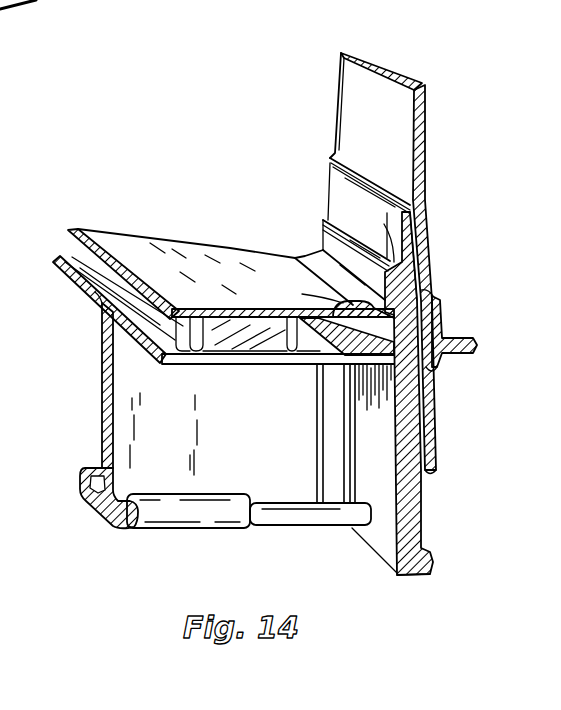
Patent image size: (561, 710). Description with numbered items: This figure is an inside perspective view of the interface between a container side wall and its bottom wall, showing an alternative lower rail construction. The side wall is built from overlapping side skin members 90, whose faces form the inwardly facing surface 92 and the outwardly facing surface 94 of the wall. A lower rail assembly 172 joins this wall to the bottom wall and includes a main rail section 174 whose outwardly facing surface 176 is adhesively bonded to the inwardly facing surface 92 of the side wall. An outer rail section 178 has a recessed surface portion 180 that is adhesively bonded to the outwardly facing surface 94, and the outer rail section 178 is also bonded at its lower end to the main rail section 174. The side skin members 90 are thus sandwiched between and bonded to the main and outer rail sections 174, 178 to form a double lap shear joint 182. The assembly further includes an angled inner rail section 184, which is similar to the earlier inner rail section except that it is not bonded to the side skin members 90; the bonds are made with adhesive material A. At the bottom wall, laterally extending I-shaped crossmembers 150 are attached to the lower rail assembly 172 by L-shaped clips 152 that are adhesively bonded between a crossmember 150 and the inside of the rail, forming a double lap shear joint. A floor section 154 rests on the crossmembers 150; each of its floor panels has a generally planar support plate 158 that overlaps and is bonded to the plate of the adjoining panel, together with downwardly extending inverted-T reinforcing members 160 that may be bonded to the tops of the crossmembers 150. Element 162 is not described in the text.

The side skin member 90 is at (381, 65).
The inwardly facing surface 92 is at (388, 120).
The outwardly facing surface 94 is at (427, 119).
The crossmember 150 is at (174, 530).
The L-shaped clip 152 is at (323, 423).
The floor section 154 is at (101, 228).
The support plate 158 is at (192, 248).
The reinforcing member 160 is at (292, 352).
The rod 162 is at (348, 534).
The lower rail assembly 172 is at (407, 587).
The main rail section 174 is at (428, 493).
The outwardly facing surface 176 is at (421, 231).
The outer rail section 178 is at (468, 333).
The recessed surface portion 180 is at (437, 371).
The double lap shear joint 182 is at (434, 286).
The angled inner rail section 184 is at (328, 237).
The adhesive material A is at (339, 256).